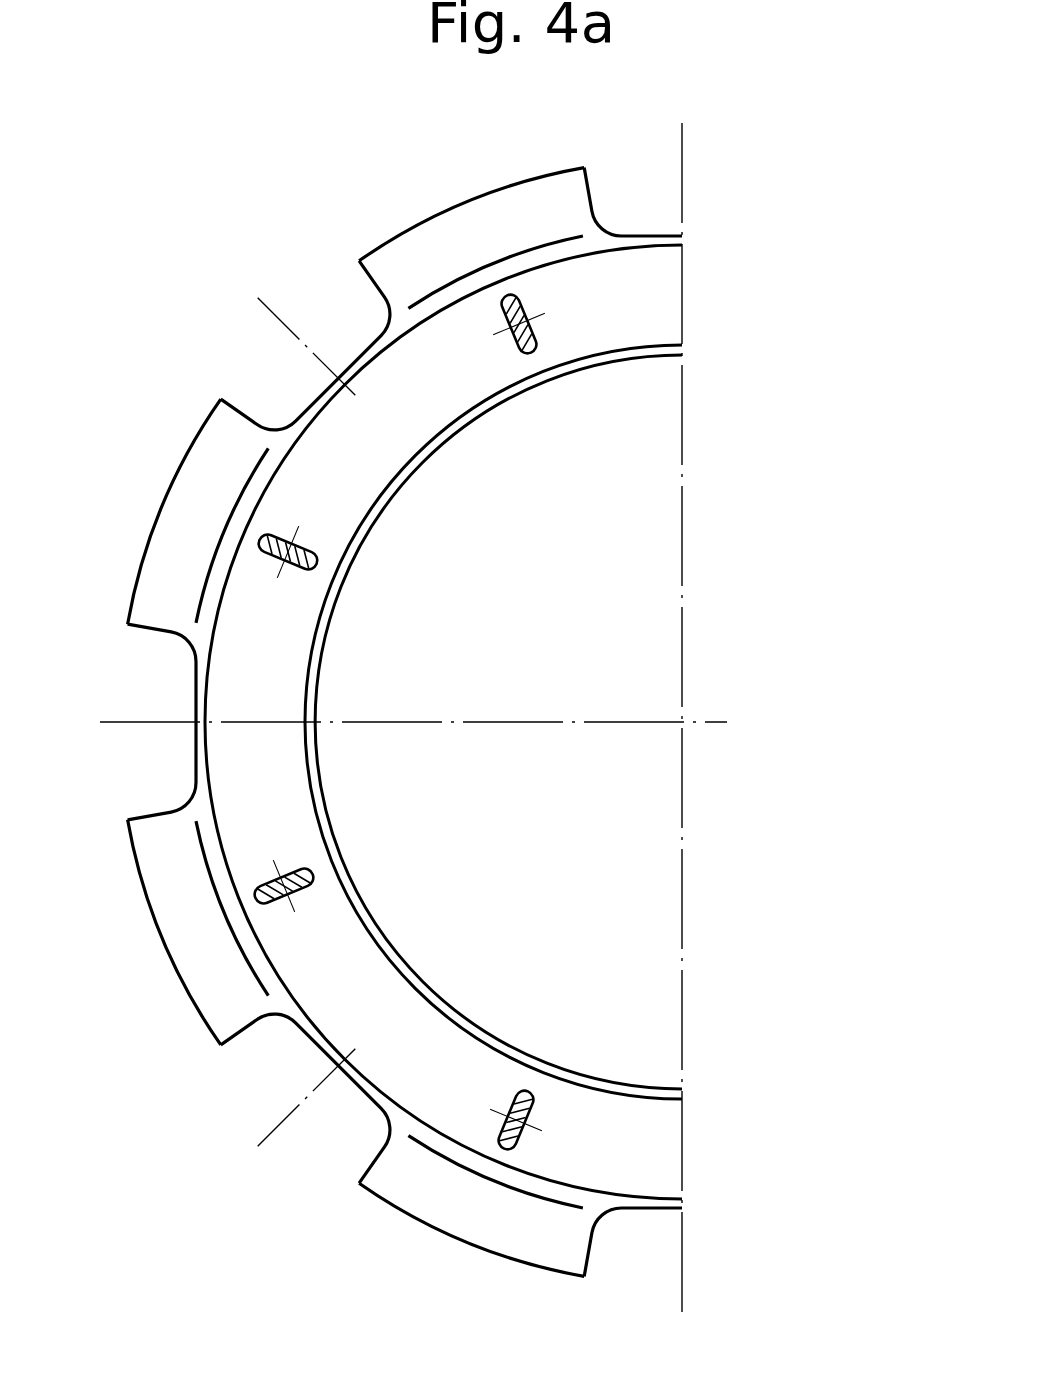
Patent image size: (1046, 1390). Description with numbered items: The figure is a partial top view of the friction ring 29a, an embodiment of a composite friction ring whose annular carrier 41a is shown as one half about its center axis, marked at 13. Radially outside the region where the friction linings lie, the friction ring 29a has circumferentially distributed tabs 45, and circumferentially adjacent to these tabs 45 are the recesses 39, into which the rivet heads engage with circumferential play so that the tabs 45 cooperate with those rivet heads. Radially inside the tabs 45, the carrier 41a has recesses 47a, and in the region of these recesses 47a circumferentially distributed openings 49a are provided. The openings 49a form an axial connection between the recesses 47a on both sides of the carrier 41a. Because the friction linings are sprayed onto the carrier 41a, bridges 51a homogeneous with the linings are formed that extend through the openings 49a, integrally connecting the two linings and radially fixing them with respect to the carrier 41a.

The axis of rotation 13 is at (683, 723).
The friction ring 29a is at (465, 686).
The recesses 39 is at (642, 196).
The carrier 41a is at (430, 446).
The tabs 45 is at (448, 250).
The recesses 47a is at (216, 622).
The openings 49a is at (531, 303).
The bridges 51a is at (535, 358).